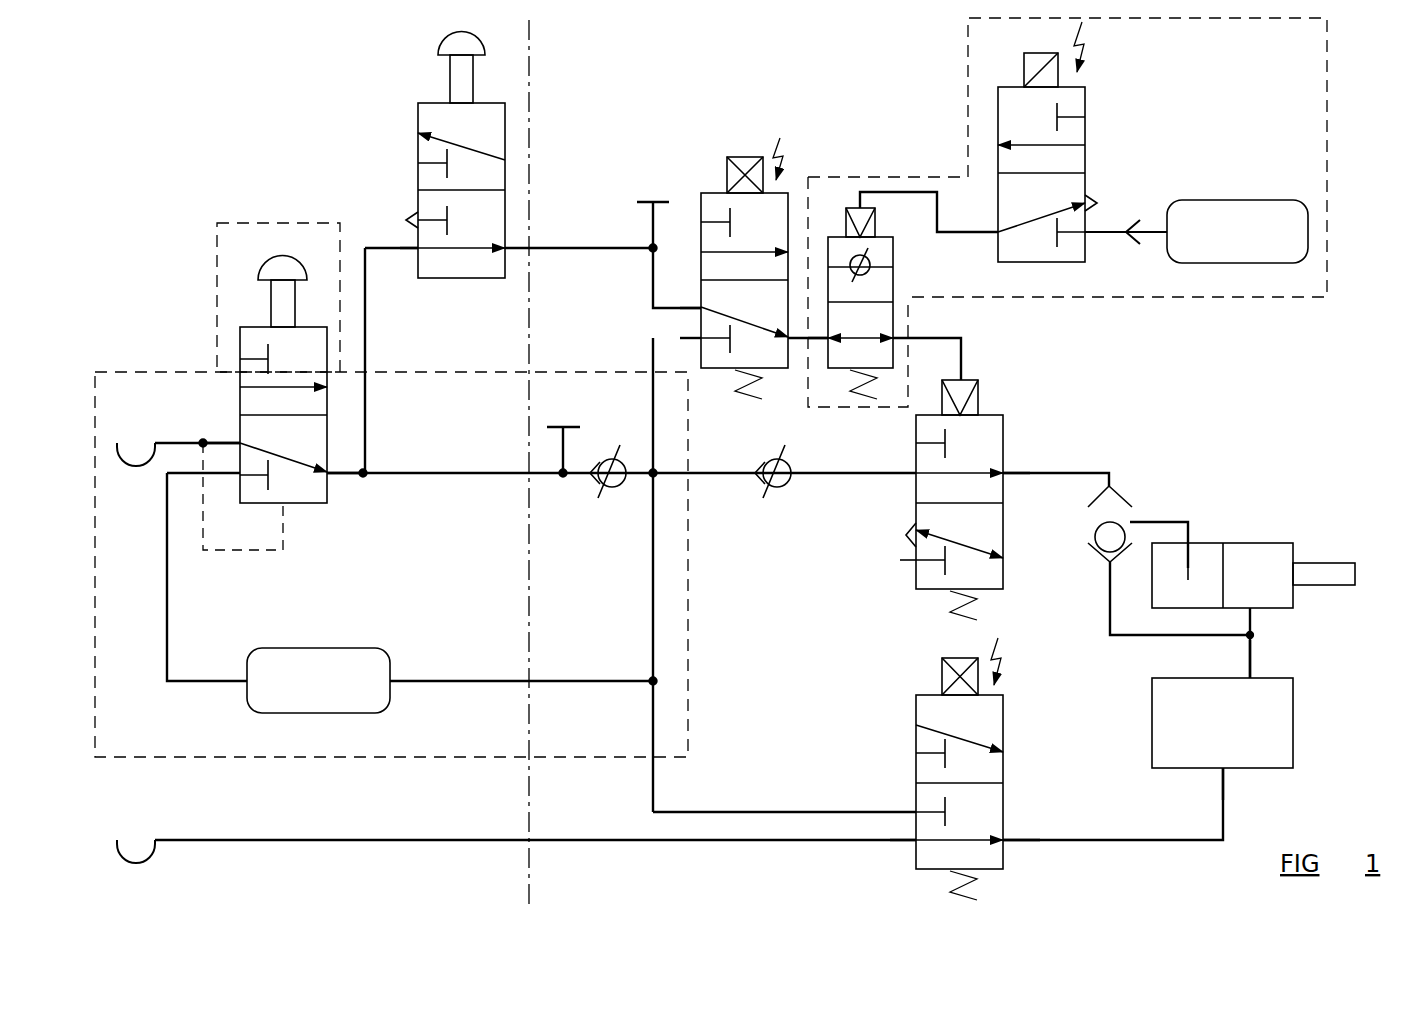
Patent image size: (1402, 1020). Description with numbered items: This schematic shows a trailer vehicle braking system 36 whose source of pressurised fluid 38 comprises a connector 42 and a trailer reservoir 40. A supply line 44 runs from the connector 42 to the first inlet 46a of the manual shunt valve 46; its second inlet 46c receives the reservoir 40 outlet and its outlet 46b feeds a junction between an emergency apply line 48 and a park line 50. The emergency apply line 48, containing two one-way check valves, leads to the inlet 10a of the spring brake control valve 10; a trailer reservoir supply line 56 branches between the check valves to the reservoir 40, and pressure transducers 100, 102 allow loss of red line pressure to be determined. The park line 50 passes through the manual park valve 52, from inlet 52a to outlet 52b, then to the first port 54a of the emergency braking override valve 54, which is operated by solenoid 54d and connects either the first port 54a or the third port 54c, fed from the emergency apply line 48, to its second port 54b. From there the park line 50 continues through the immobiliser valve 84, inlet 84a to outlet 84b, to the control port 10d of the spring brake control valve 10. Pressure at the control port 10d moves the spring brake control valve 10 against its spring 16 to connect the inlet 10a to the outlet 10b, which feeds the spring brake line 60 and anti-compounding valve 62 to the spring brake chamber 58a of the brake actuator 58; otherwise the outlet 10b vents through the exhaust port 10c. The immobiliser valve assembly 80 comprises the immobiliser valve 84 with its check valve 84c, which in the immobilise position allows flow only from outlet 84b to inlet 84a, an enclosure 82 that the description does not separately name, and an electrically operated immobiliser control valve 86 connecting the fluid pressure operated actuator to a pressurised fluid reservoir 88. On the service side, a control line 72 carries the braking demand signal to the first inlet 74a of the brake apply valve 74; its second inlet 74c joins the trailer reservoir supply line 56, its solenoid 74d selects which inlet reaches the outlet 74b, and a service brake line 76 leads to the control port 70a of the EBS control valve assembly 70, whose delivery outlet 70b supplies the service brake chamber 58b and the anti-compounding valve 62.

The spring brake control valve 10 is at (1012, 440).
The inlet 10a is at (912, 535).
The outlet 10b is at (1005, 476).
The exhaust port 10c is at (916, 560).
The control port 10d is at (965, 385).
The resilient biasing element 16 is at (950, 592).
The vehicle braking system 36 is at (277, 194).
The source of pressurised fluid 38 is at (95, 520).
The pressurised fluid reservoir 40 is at (318, 680).
The connector 42 is at (140, 462).
The supply line 44 is at (178, 442).
The shunt valve 46 is at (240, 333).
The first inlet 46a is at (240, 443).
The outlet 46b is at (332, 475).
The second inlet 46c is at (240, 480).
The emergency apply line 48 is at (405, 475).
The park line 50 is at (363, 268).
The park valve 52 is at (418, 140).
The inlet 52a is at (415, 250).
The outlet 52b is at (505, 248).
The emergency braking override valve 54 is at (798, 182).
The first port 54a is at (703, 335).
The second port 54b is at (790, 340).
The third port 54c is at (700, 336).
The solenoid 54d is at (745, 158).
The trailer reservoir supply line 56 is at (478, 683).
The spring brake actuator 58 is at (1268, 540).
The spring brake chamber 58a is at (1192, 600).
The service brake chamber 58b is at (1268, 585).
The spring brake line 60 is at (1090, 472).
The anti-compounding valve 62 is at (1133, 520).
The EBS control valve assembly 70 is at (1222, 723).
The control port 70a is at (1225, 770).
The delivery outlet 70b is at (1255, 680).
The control line 72 is at (335, 840).
The brake apply valve 74 is at (1010, 768).
The first inlet 74a is at (916, 842).
The outlet 74b is at (1005, 845).
The second inlet 74c is at (916, 812).
The solenoid 74d is at (942, 676).
The service brake line 76 is at (1060, 840).
The immobiliser valve assembly 80 is at (1243, 300).
The pressure regulating unit 82 is at (958, 342).
The immobiliser valve 84 is at (895, 243).
The inlet 84a is at (830, 340).
The outlet 84b is at (895, 338).
The check valve 84c is at (868, 265).
The immobiliser control valve 86 is at (1087, 172).
The pressurised fluid reservoir 88 is at (1196, 231).
The pressure transducer 100 is at (653, 200).
The pressure transducer 102 is at (570, 427).